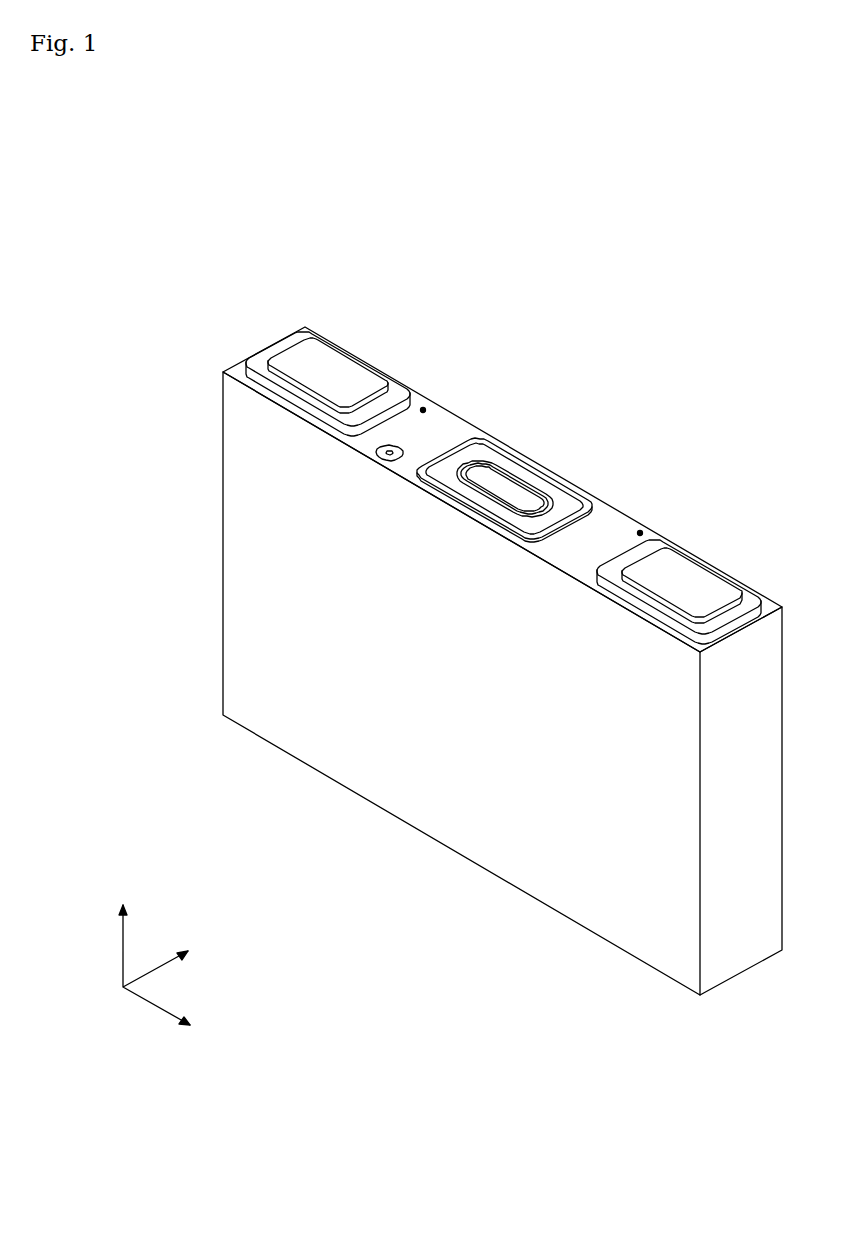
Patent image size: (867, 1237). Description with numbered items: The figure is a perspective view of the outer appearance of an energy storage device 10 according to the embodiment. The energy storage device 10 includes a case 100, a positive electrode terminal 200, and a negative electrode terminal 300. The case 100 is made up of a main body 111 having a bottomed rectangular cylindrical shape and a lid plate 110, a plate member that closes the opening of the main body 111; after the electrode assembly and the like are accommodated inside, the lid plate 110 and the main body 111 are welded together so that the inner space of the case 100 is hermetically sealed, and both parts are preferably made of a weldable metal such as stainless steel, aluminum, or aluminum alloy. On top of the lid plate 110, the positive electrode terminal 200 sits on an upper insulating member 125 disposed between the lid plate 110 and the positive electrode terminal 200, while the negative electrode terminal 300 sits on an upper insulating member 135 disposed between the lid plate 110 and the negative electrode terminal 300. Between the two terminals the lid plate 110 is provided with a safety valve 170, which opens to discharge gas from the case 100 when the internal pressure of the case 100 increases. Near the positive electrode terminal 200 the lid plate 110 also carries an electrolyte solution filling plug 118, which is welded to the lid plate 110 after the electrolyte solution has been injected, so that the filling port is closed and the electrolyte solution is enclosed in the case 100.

The energy storage device 10 is at (703, 308).
The case 100 is at (138, 443).
The lid plate 110 is at (347, 453).
The main body 111 is at (250, 519).
The electrolyte solution filling plug 118 is at (399, 447).
The upper insulating member 125 is at (388, 393).
The upper insulating member 135 is at (652, 541).
The safety valve 170 is at (505, 498).
The positive electrode terminal 200 is at (328, 372).
The negative electrode terminal 300 is at (695, 578).